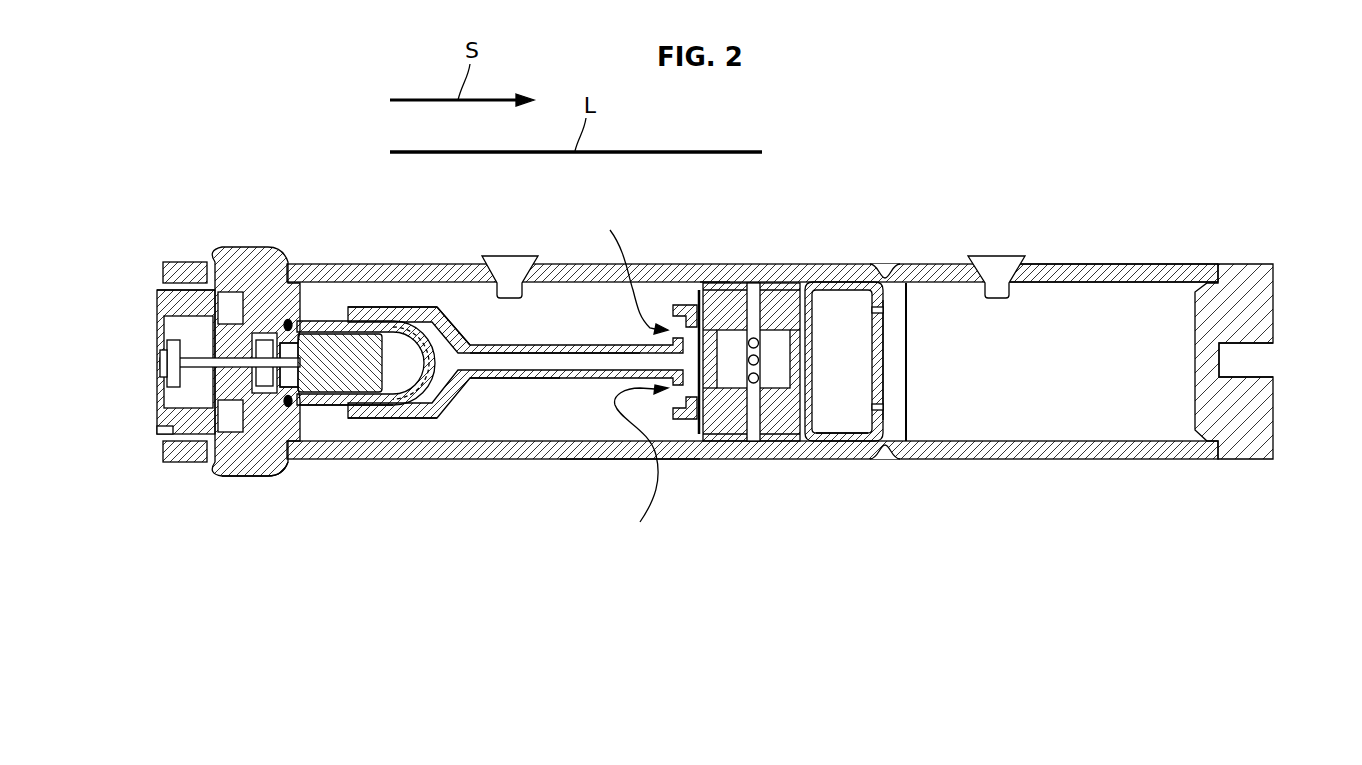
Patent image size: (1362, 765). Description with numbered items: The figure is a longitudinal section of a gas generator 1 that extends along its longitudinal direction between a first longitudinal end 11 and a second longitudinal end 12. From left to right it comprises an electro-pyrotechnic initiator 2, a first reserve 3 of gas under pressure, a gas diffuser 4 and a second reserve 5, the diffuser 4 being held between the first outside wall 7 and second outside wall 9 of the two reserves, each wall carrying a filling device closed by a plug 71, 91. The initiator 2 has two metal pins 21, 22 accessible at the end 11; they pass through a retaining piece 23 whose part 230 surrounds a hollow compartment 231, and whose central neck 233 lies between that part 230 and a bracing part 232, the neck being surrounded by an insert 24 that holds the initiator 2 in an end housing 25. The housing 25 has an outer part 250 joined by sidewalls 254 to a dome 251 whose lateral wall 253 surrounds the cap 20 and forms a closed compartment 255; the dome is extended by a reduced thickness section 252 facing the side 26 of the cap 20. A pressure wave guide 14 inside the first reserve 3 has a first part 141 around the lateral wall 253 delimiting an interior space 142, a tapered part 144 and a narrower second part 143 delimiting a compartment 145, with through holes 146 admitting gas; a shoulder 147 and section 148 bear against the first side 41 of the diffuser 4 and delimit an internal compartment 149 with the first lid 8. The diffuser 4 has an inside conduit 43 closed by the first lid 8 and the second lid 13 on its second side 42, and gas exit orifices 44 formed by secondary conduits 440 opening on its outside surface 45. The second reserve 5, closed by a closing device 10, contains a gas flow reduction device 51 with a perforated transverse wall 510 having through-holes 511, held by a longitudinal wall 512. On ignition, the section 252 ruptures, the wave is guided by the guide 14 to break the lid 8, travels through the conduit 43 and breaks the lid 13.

The gas generator 1 is at (831, 132).
The electro-pyrotechnic initiator 2 is at (300, 305).
The first reserve of gas under pressure 3 is at (633, 442).
The gas diffuser 4 is at (770, 400).
The second reserve of gas under pressure 5 is at (1043, 320).
The first outside wall 7 is at (650, 345).
The first lid 8 is at (705, 441).
The second outside wall 9 is at (1118, 268).
The closing device 10 is at (1253, 420).
The first longitudinal end 11 is at (170, 272).
The second longitudinal end 12 is at (1273, 302).
The second lid 13 is at (850, 283).
The pressure wave guide 14 is at (521, 396).
The cap 20 is at (355, 352).
The metal pin 21 is at (167, 380).
The metal pin 22 is at (163, 363).
The retaining piece 23 is at (213, 473).
The insert 24 is at (258, 470).
The end housing 25 is at (185, 465).
The longitudinal side of cap 26 is at (385, 328).
The first longitudinal side 41 is at (722, 305).
The second longitudinal side 42 is at (800, 310).
The inside gas passage conduit 43 is at (715, 395).
The gas exit orifice 44 is at (752, 320).
The outside surface 45 is at (763, 305).
The gas flow reduction device 51 is at (907, 373).
The plug 71 is at (513, 263).
The plug 91 is at (1000, 263).
The first part of guide wall 141 is at (413, 307).
The interior space 142 is at (460, 300).
The second part of guide wall 143 is at (594, 442).
The tapered part 144 is at (462, 440).
The second pressure wave guide compartment 145 is at (553, 358).
The through hole 146 is at (620, 271).
The shoulder 147 is at (635, 466).
The section 148 is at (672, 312).
The internal compartment 149 is at (712, 290).
The part of retaining piece 230 is at (178, 443).
The hollow compartment 231 is at (190, 335).
The bracing part 232 is at (246, 328).
The central neck 233 is at (240, 355).
The part of housing 250 is at (233, 467).
The dome 251 is at (377, 400).
The reduced thickness section 252 is at (440, 420).
The lateral wall 253 is at (340, 305).
The sidewall 254 is at (293, 418).
The closed compartment 255 is at (407, 398).
The secondary conduit 440 is at (810, 345).
The transverse wall 510 is at (908, 340).
The through-hole 511 is at (912, 288).
The longitudinal wall 512 is at (838, 432).